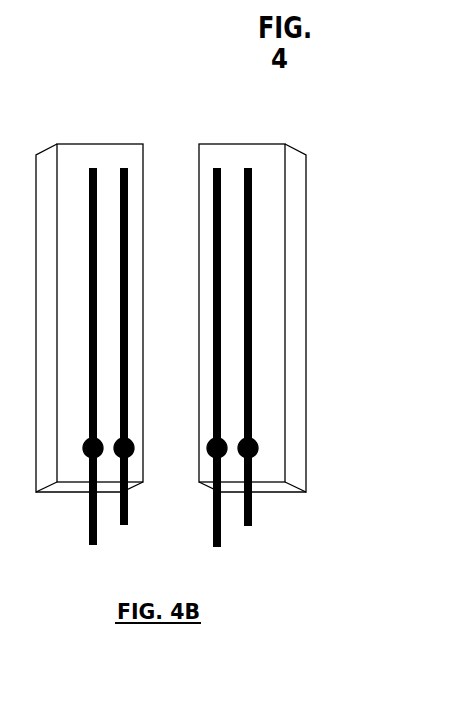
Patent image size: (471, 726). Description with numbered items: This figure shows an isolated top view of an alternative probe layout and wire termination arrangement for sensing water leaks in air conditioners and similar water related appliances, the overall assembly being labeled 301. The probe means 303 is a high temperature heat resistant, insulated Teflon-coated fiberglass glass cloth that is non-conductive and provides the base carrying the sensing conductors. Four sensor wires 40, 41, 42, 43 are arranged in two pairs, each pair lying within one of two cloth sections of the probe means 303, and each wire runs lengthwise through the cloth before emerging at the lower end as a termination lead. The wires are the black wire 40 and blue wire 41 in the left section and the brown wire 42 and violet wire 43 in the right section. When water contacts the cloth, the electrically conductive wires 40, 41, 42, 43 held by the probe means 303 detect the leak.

The cable assembly 301 is at (162, 343).
The probe means 303 is at (153, 265).
The sensor wire 40 is at (156, 355).
The sensor wire 41 is at (95, 378).
The sensor wire 42 is at (216, 379).
The sensor wire 43 is at (281, 355).